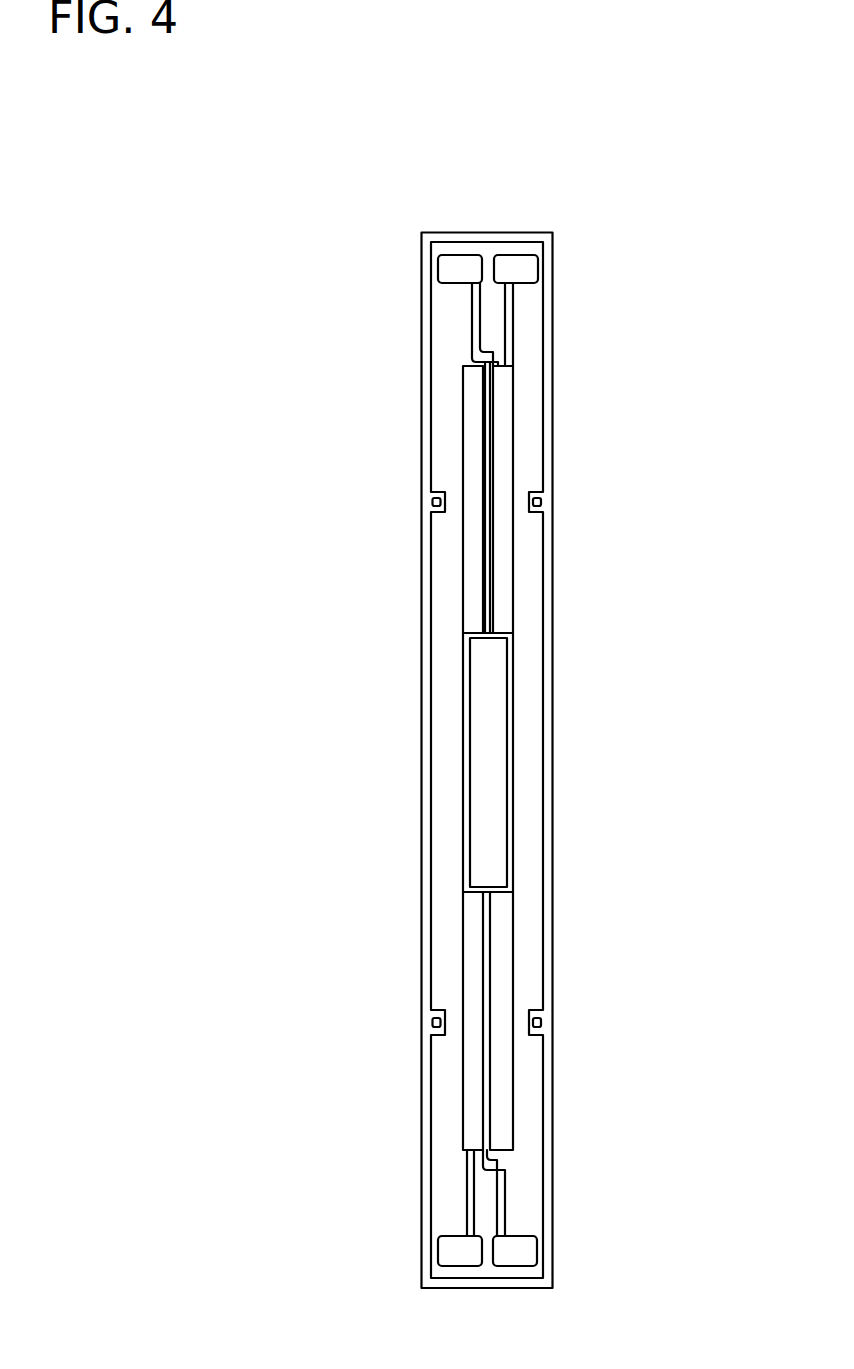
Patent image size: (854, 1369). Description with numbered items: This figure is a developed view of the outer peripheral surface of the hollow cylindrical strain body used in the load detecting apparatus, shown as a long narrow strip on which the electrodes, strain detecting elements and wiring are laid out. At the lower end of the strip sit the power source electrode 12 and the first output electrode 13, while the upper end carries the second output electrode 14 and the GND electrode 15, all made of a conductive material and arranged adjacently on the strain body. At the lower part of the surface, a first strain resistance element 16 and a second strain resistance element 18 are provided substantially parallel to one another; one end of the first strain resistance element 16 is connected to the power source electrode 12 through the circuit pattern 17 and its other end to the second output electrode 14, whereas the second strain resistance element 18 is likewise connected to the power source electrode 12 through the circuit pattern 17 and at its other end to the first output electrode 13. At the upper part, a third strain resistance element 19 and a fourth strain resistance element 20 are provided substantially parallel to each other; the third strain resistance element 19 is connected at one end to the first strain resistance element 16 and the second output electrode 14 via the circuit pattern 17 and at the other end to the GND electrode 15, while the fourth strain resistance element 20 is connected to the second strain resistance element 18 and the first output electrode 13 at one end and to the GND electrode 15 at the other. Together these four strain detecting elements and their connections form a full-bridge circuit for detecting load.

The power source electrode 12 is at (517, 1250).
The first output electrode 13 is at (458, 1250).
The second output electrode 14 is at (520, 272).
The GND electrode 15 is at (462, 268).
The first strain resistance element 16 is at (500, 988).
The circuit pattern 17 is at (500, 1194).
The second strain resistance element 18 is at (473, 962).
The third strain resistance element 19 is at (500, 475).
The fourth strain resistance element 20 is at (475, 458).